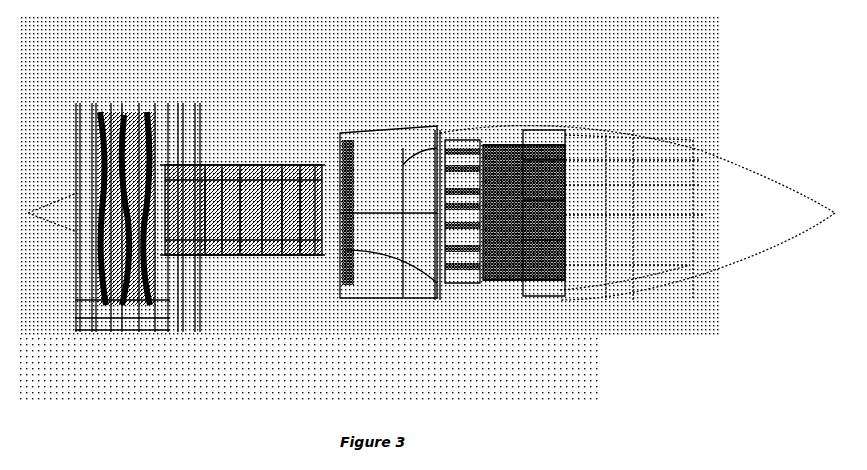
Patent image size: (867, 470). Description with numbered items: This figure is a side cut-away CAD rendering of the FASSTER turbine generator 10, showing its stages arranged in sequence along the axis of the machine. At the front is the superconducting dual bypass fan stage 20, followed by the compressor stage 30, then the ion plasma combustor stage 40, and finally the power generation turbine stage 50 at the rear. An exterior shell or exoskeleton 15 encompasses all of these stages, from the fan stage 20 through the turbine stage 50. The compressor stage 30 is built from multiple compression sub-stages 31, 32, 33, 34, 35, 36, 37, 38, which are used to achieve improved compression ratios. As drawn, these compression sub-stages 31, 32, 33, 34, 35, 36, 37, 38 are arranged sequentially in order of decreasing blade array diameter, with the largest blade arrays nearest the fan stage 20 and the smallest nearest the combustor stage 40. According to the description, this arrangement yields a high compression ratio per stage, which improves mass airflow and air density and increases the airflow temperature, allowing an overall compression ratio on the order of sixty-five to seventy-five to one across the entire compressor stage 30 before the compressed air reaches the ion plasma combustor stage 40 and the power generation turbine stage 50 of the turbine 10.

The FASSTER generator/turbine 10 is at (404, 85).
The exterior shell or exoskeleton 15 is at (250, 155).
The superconducting dual bypass fan stage 20 is at (158, 332).
The compressor stage 30 is at (318, 332).
The compression sub-stage 31 is at (183, 147).
The compression sub-stage 32 is at (210, 162).
The compression sub-stage 33 is at (222, 262).
The compression sub-stage 34 is at (243, 262).
The compression sub-stage 35 is at (262, 262).
The compression sub-stage 36 is at (280, 262).
The compression sub-stage 37 is at (293, 262).
The compression sub-stage 38 is at (308, 262).
The ion plasma combustor stage 40 is at (440, 332).
The power generation turbine stage 50 is at (568, 332).